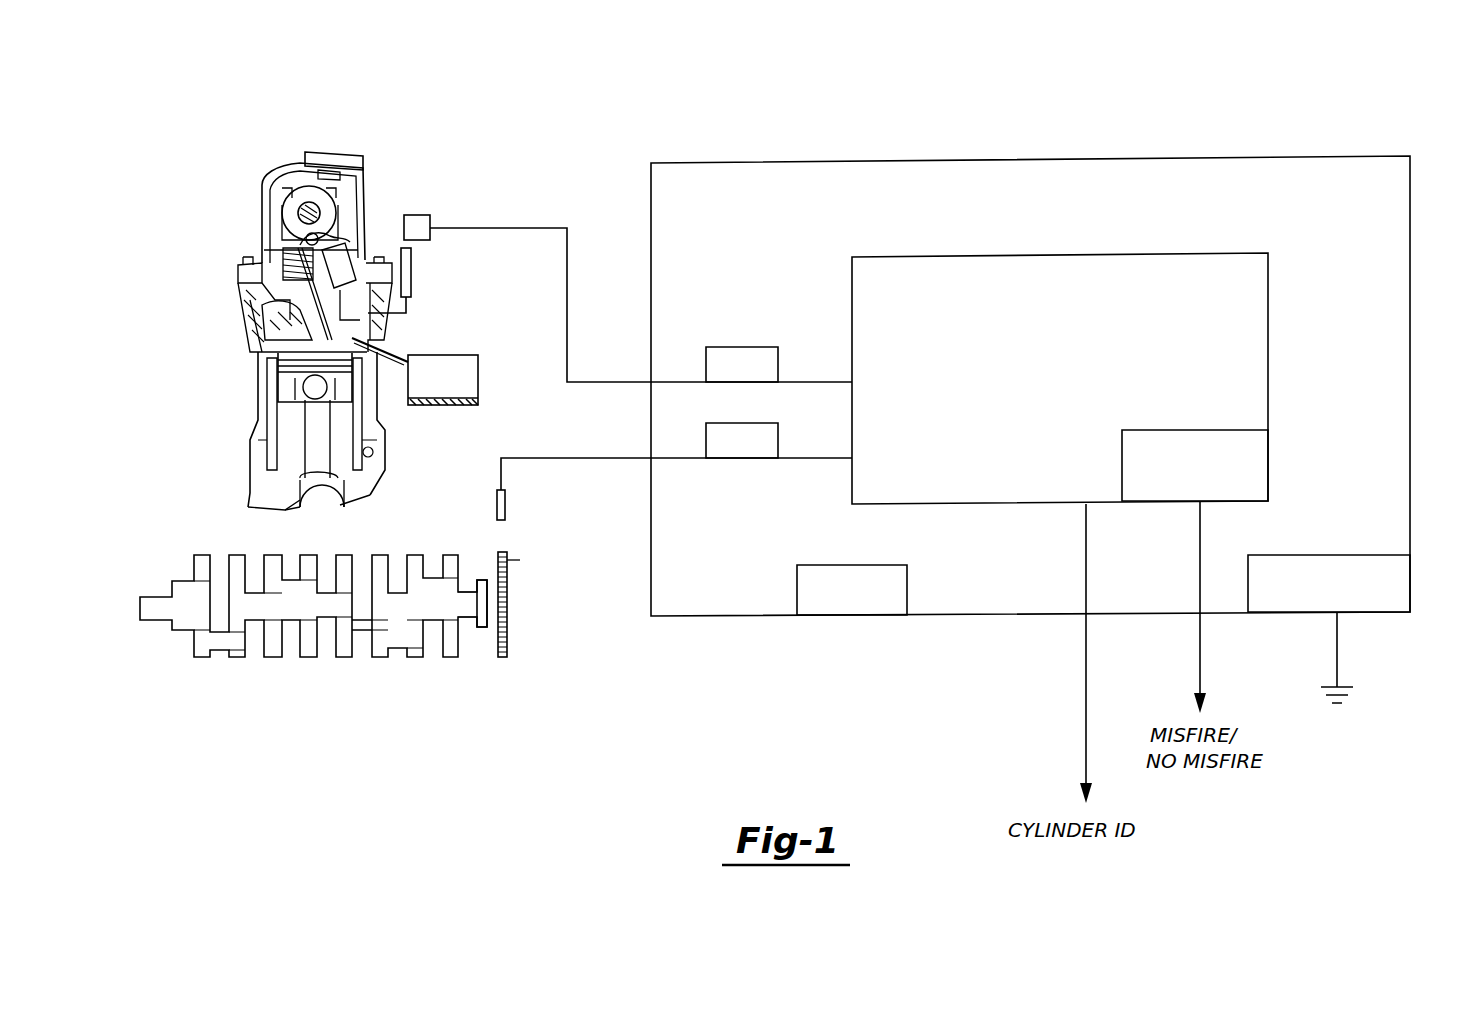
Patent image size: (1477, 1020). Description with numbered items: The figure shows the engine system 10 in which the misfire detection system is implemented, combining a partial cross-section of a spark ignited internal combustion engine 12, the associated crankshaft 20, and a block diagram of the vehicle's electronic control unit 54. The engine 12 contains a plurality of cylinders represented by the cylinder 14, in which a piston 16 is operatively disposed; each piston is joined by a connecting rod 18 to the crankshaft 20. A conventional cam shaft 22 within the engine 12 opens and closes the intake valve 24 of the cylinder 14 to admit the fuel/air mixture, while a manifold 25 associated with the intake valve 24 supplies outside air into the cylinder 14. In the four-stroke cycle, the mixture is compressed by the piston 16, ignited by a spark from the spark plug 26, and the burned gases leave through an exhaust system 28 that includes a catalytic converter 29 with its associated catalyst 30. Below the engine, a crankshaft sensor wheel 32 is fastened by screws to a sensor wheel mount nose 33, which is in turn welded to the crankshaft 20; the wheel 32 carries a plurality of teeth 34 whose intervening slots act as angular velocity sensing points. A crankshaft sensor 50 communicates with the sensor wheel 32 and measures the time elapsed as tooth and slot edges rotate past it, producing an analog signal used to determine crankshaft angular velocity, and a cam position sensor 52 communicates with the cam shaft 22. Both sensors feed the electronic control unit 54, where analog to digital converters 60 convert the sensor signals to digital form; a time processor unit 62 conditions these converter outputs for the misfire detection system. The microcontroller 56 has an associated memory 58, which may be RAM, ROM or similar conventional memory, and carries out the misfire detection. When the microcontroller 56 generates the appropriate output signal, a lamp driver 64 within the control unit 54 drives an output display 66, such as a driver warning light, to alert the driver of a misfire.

The engine system 10 is at (1228, 106).
The internal combustion spark ignited engine 12 is at (215, 393).
The cylinder 14 is at (276, 432).
The piston 16 is at (316, 452).
The connecting rod 18 is at (328, 502).
The crankshaft 20 is at (181, 630).
The cam shaft 22 is at (298, 214).
The intake valve 24 is at (262, 268).
The manifold 25 is at (264, 318).
The spark plug 26 is at (410, 314).
The exhaust system 28 is at (406, 340).
The catalytic converter 29 is at (479, 358).
The catalyst 30 is at (437, 405).
The crankshaft sensor wheel 32 is at (508, 645).
The sensor wheel mount nose 33 is at (472, 620).
The teeth 34 is at (507, 560).
The crankshaft sensor 50 is at (505, 505).
The cam position sensor 52 is at (420, 215).
The electronic control unit 54 is at (1411, 382).
The microcontroller 56 is at (1269, 404).
The memory 58 is at (1206, 430).
The analog to digital converters 60 is at (733, 347).
The time processor unit 62 is at (820, 565).
The lamp driver 64 is at (1352, 555).
The output display 66 is at (1340, 687).